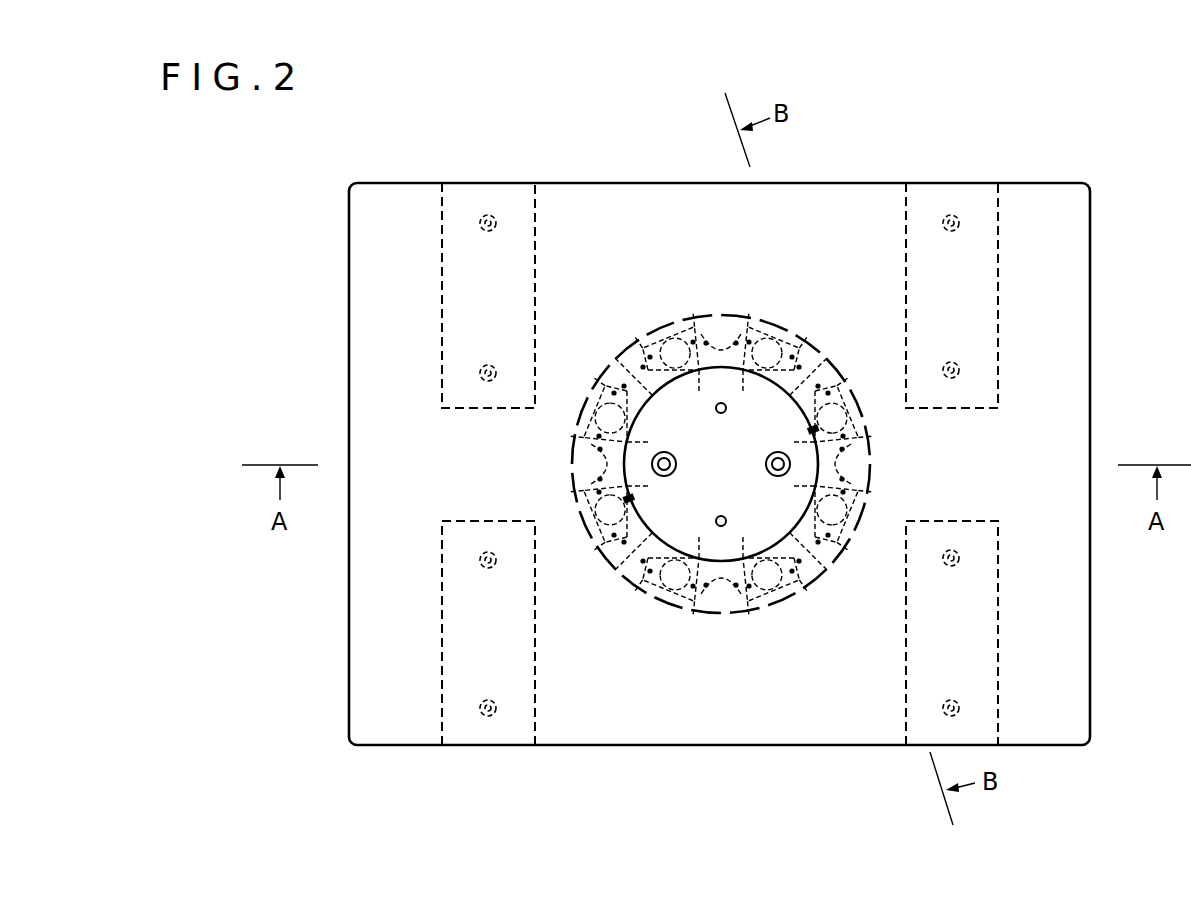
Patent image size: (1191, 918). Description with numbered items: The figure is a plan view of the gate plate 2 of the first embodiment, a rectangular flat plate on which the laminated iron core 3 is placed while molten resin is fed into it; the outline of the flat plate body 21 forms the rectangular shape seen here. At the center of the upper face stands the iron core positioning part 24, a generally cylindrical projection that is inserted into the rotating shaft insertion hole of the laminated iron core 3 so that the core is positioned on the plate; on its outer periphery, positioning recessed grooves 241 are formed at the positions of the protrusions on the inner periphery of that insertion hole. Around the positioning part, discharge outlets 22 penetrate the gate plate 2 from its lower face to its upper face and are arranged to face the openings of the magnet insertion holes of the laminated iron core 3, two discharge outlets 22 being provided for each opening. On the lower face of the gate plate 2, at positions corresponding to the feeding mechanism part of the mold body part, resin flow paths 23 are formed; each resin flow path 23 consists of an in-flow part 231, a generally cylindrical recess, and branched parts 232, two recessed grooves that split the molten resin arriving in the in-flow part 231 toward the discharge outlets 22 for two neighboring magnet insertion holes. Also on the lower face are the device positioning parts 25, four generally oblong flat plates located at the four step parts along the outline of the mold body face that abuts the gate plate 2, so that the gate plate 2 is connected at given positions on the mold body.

The gate plate 2 is at (1054, 145).
The base plate 21 is at (1064, 271).
The discharge outlet 22 is at (697, 318).
The resin flow path 23 is at (792, 318).
The in-flow part 231 is at (772, 318).
The branched part 232 is at (710, 318).
The iron core positioning part 24 is at (684, 522).
The positioning recessed groove 241 is at (810, 428).
The device positioning part 25 is at (906, 230).
The laminated iron core 3 is at (633, 320).